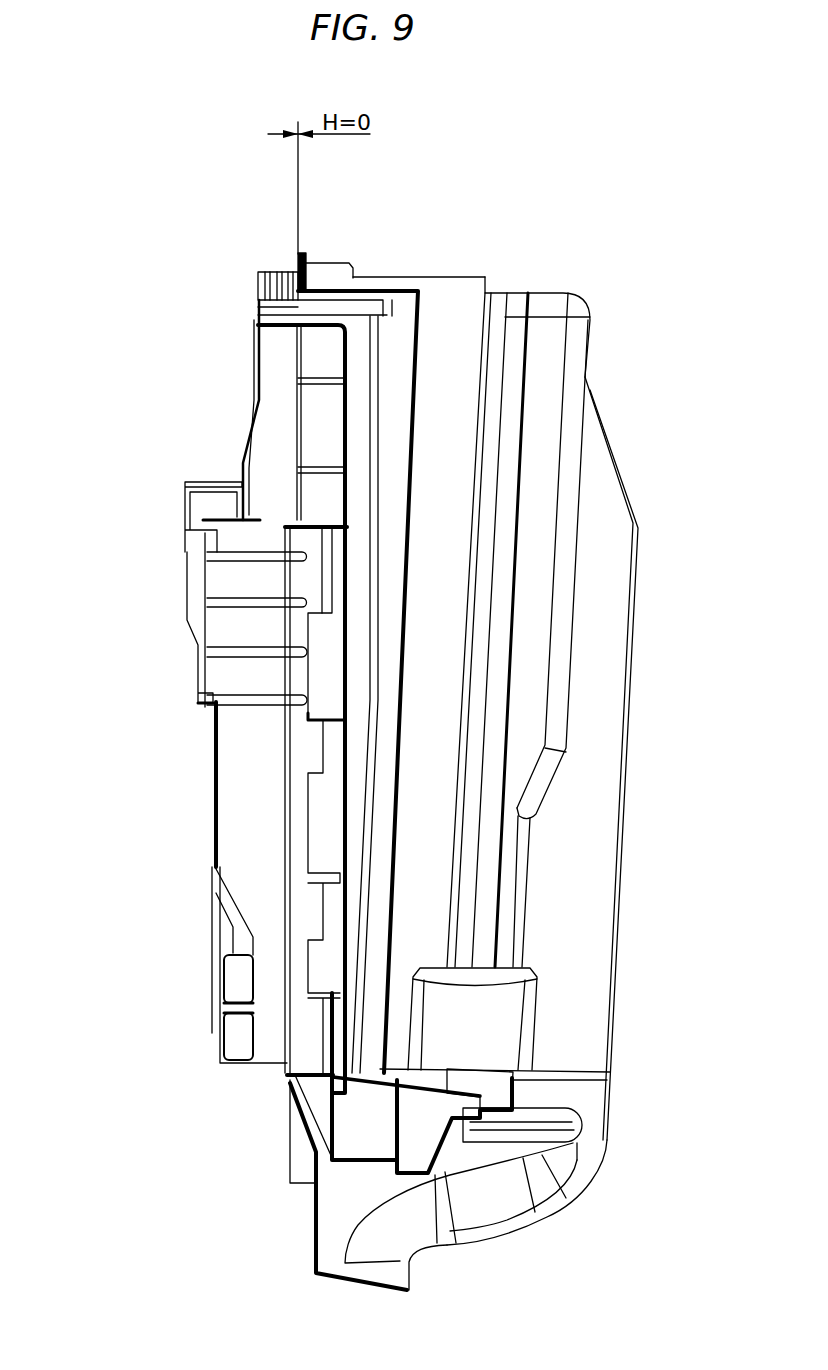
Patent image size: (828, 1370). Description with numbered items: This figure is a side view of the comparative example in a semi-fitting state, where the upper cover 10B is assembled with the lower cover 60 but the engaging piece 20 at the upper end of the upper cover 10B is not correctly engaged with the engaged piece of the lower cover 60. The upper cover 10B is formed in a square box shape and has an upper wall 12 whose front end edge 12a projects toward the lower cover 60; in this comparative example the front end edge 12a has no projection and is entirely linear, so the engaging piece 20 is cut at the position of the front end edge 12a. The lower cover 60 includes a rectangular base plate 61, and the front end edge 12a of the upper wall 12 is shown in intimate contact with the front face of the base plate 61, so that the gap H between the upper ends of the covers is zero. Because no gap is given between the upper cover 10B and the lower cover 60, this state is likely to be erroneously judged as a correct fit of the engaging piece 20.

The upper cover 10B is at (474, 248).
The upper wall 12 is at (421, 282).
The front end edge 12a is at (298, 265).
The engaging piece 20 is at (333, 274).
The lower cover 60 is at (228, 413).
The base plate 61 is at (307, 276).